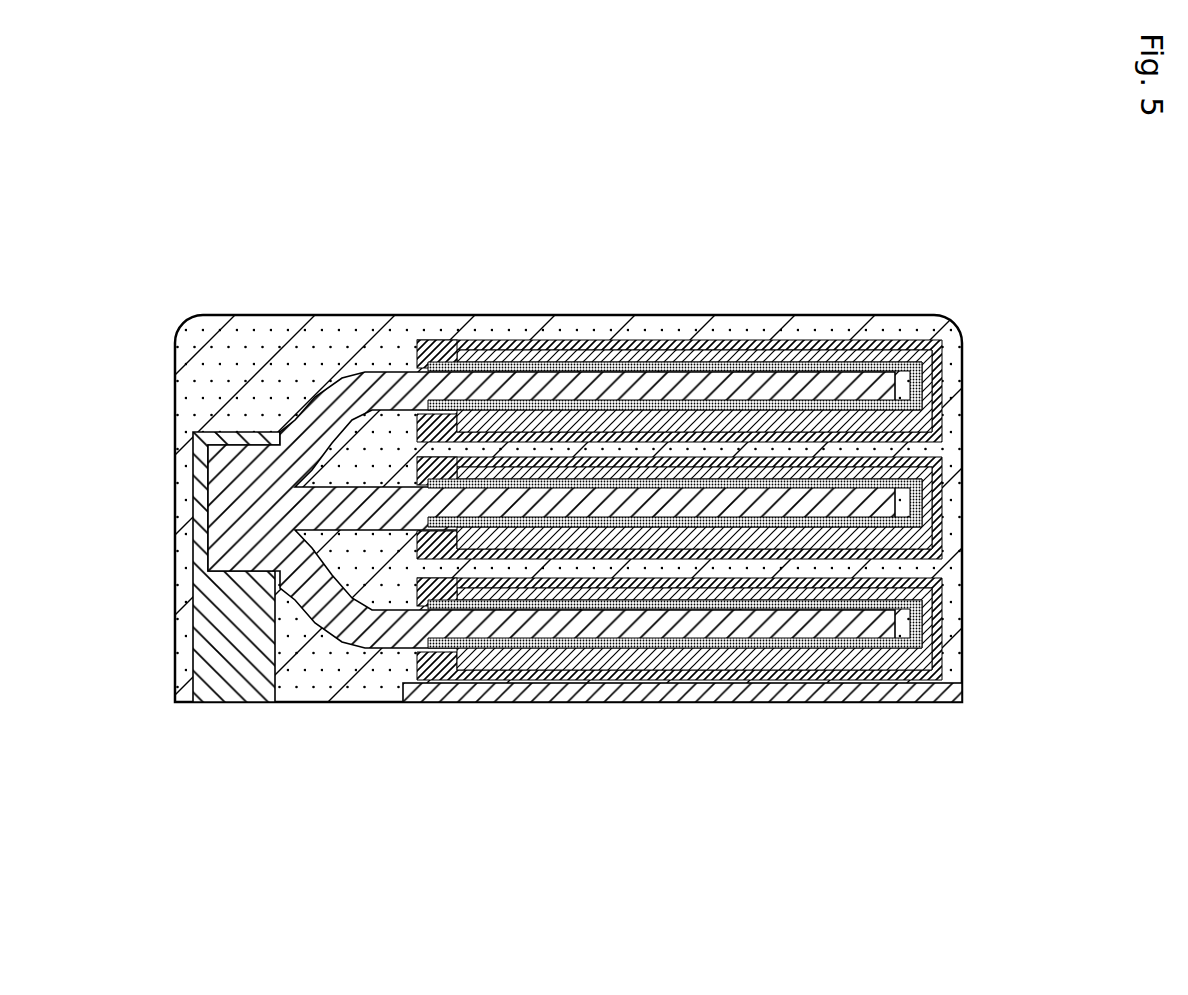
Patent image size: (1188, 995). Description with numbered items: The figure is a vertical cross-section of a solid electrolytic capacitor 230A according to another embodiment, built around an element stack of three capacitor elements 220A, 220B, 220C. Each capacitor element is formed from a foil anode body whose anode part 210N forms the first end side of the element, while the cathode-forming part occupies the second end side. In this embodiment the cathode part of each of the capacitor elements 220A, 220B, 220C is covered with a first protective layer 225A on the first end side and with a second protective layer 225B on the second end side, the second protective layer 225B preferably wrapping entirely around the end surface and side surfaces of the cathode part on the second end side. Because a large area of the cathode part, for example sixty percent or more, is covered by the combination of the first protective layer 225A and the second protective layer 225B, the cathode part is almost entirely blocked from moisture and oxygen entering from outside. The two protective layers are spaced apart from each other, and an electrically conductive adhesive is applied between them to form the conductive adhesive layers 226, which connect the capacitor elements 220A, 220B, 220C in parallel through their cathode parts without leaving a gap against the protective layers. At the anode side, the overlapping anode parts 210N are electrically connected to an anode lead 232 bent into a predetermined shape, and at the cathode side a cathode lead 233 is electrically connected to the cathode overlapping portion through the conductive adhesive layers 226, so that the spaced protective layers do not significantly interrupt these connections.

The anode part 210N is at (288, 467).
The first protective layer 225A is at (443, 336).
The second protective layer 225B is at (847, 342).
The conductive adhesive layer 226 is at (712, 445).
The solid electrolytic capacitor 230A is at (563, 301).
The capacitor element 220A is at (738, 347).
The capacitor element 220B is at (958, 517).
The capacitor element 220C is at (958, 624).
The anode lead 232 is at (240, 680).
The cathode lead 233 is at (510, 700).